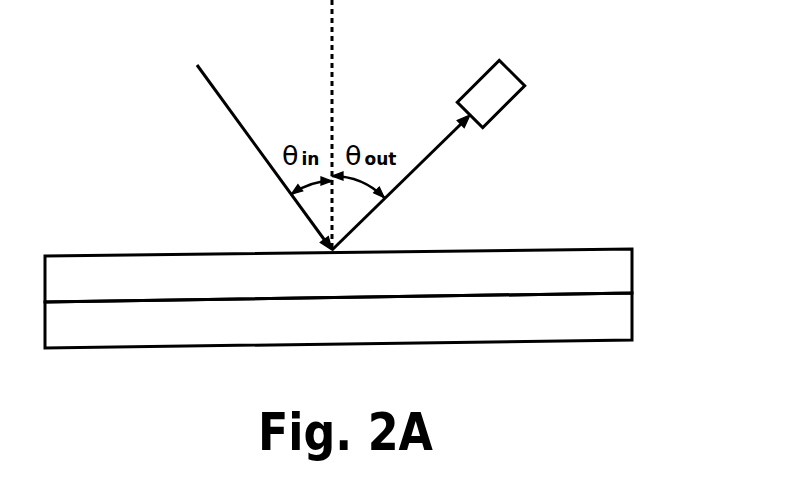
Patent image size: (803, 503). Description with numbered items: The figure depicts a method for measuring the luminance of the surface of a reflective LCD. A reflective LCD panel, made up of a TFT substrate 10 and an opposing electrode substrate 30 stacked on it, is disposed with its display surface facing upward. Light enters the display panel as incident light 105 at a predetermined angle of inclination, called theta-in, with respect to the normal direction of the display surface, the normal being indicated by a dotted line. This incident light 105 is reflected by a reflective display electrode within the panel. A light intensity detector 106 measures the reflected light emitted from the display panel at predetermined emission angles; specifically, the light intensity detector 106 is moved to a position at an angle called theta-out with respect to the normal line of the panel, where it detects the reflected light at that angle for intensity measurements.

The TFT substrate 10 is at (618, 320).
The opposing electrode substrate 30 is at (618, 275).
The incident light 105 is at (230, 110).
The light intensity detector 106 is at (497, 107).